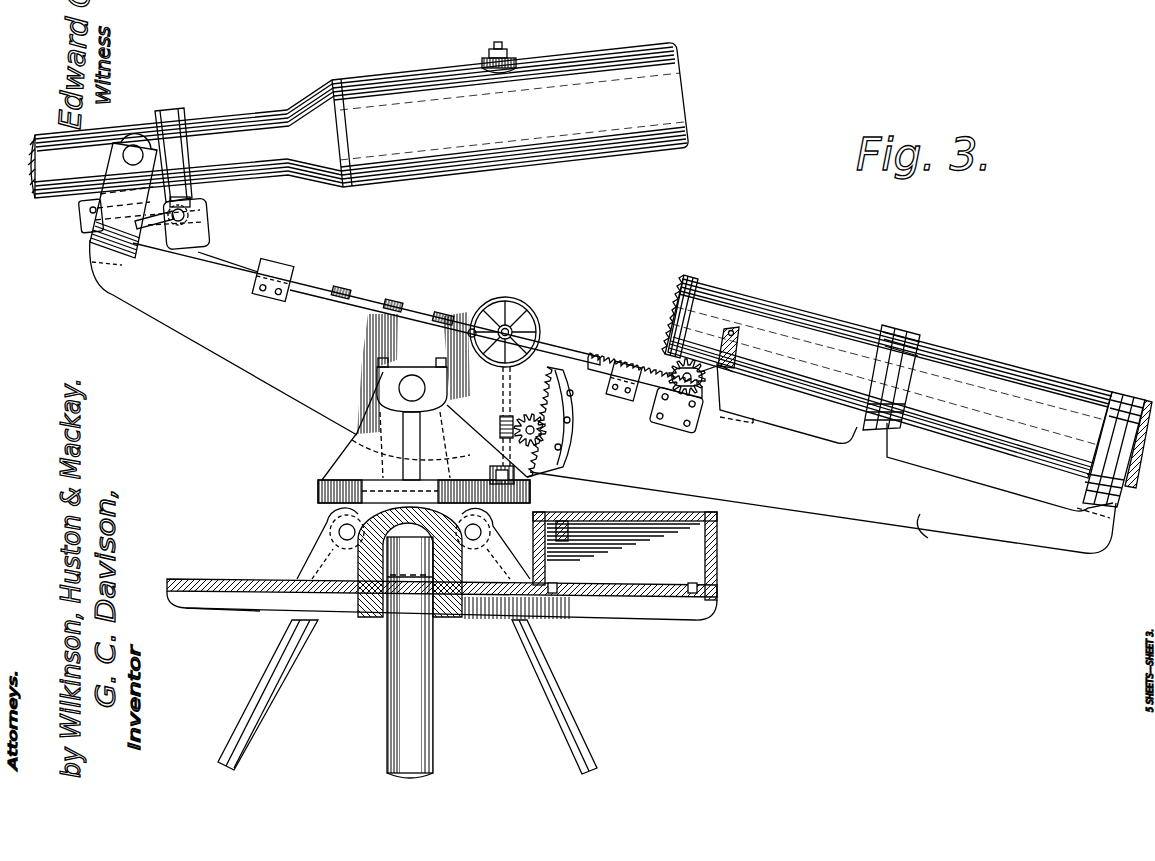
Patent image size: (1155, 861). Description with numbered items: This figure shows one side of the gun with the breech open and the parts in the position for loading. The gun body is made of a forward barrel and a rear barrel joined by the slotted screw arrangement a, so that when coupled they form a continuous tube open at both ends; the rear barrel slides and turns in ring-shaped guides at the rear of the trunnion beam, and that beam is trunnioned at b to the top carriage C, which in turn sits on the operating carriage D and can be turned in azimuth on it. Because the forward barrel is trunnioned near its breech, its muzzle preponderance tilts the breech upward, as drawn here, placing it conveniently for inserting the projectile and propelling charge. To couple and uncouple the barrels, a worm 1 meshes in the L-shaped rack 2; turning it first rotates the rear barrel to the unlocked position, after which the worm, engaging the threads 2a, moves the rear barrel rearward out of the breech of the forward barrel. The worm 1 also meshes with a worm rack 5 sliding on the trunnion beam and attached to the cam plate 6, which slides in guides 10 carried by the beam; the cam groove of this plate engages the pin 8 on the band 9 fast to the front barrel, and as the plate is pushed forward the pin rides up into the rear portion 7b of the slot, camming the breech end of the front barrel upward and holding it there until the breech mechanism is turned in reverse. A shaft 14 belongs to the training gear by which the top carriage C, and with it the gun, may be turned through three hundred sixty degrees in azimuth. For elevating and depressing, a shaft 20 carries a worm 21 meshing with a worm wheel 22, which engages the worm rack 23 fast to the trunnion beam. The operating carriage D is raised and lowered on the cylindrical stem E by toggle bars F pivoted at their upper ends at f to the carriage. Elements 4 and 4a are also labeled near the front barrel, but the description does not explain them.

The top carriage C is at (330, 457).
The operating carriage D is at (307, 560).
The cylindrical stem E is at (432, 720).
The toggle bars F is at (267, 717).
The upper pivot of toggle bars f is at (330, 526).
The slotted screw arrangement a is at (671, 322).
The trunnion b is at (412, 384).
The worm 1 is at (706, 383).
The L-shaped rack 2 is at (734, 356).
The threads 2a is at (740, 349).
The clamp strap 4 is at (140, 252).
The clamp block 4a is at (88, 236).
The worm rack 5 is at (660, 420).
The cam plate 6 is at (315, 279).
The rear portion of cam slot 7b is at (209, 232).
The pin 8 is at (184, 210).
The band 9 is at (175, 108).
The guides 10 is at (272, 300).
The shaft 14 is at (525, 318).
The shaft 20 is at (492, 468).
The worm 21 is at (515, 430).
The worm wheel 22 is at (508, 416).
The worm rack 23 is at (552, 372).